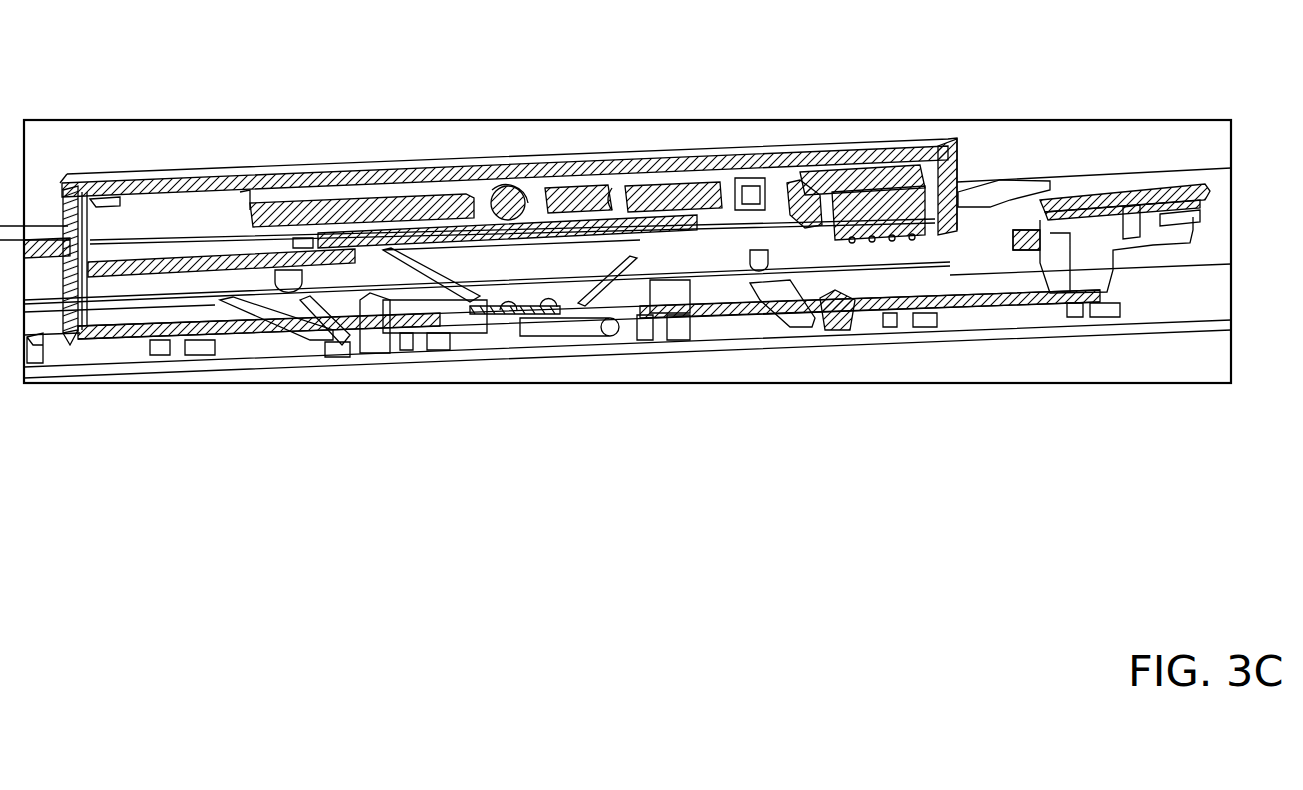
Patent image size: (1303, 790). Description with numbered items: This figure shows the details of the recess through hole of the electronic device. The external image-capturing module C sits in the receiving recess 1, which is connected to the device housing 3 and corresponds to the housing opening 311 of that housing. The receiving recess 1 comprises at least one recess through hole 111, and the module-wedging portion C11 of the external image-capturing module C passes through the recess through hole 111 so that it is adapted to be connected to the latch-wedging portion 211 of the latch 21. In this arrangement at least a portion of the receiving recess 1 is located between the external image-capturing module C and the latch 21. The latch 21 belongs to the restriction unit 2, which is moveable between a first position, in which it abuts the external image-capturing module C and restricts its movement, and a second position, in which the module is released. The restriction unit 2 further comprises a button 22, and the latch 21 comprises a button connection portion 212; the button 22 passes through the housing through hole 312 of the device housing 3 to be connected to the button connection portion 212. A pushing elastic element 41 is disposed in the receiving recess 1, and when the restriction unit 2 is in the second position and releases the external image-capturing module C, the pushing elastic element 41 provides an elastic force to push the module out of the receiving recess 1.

The receiving recess 1 is at (153, 312).
The restriction unit 2 is at (1160, 252).
The device housing 3 is at (42, 232).
The latch 21 is at (1006, 302).
The button 22 is at (1125, 185).
The pushing elastic element 41 is at (457, 300).
The recess through hole 111 is at (823, 285).
The latch-wedging portion 211 is at (847, 327).
The button connection portion 212 is at (1167, 222).
The housing opening 311 is at (72, 336).
The housing through hole 312 is at (1005, 180).
The external image-capturing module C is at (195, 182).
The module-wedging portion C11 is at (750, 283).